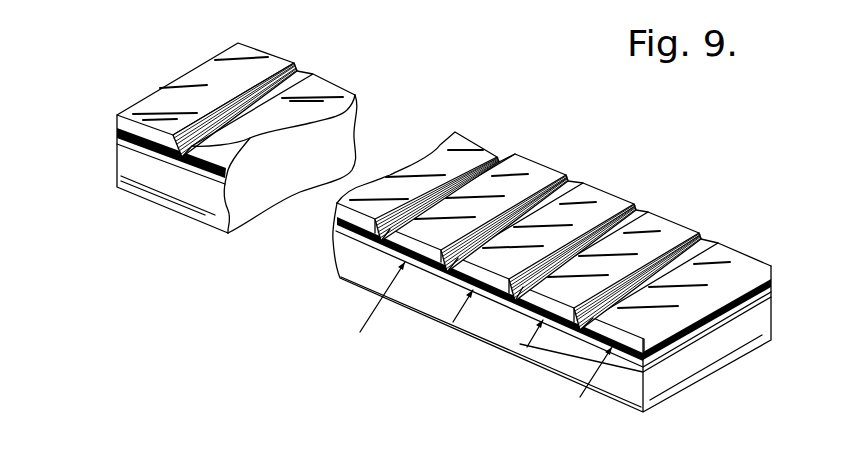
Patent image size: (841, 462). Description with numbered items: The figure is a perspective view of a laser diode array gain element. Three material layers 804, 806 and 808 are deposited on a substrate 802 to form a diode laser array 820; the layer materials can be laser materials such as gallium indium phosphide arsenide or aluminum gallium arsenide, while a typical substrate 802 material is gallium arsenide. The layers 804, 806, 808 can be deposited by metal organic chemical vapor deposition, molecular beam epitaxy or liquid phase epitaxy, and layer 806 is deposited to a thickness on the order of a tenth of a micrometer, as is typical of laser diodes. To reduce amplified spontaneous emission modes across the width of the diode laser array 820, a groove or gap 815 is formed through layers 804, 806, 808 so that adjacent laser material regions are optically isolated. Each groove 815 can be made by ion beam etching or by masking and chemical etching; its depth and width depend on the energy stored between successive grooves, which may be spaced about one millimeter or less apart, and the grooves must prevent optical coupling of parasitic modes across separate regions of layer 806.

The substrate 802 is at (210, 232).
The material layer 804 is at (116, 143).
The material layer 806 is at (115, 129).
The material layer 808 is at (116, 117).
The groove 815 is at (638, 212).
The diode laser array 820 is at (427, 87).